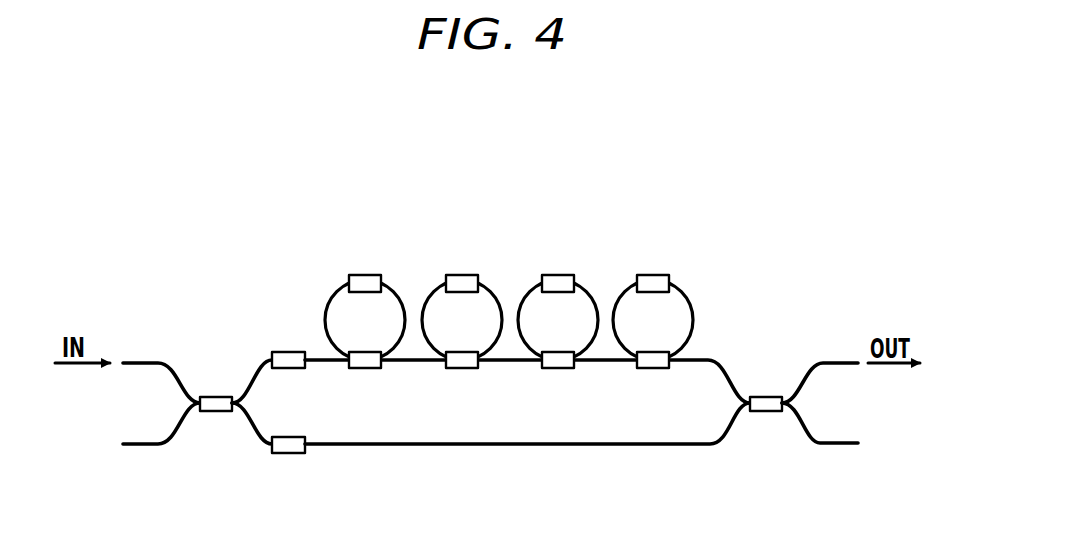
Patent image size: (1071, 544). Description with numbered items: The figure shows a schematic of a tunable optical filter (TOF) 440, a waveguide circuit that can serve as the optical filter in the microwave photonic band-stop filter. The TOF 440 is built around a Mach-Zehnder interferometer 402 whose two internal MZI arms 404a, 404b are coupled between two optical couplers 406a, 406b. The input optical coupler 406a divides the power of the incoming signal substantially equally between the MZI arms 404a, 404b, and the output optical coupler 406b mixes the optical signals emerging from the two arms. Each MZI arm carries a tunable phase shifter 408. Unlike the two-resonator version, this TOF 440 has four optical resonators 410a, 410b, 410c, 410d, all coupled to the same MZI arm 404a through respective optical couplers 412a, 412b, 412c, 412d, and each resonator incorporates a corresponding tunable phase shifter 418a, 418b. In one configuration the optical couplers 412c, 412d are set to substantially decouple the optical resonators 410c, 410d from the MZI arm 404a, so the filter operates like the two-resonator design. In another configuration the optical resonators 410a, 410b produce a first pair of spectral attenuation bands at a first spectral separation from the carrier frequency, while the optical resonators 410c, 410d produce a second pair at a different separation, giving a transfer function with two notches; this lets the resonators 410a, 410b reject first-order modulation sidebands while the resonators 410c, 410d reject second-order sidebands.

The tunable optical filter (TOF) 440 is at (511, 99).
The Mach-Zehnder interferometer 402 is at (225, 470).
The MZI arm 404a is at (717, 356).
The MZI arm 404b is at (517, 445).
The optical coupler 406a is at (218, 396).
The optical coupler 406b is at (763, 411).
The tunable phase shifter 408 is at (286, 369).
The optical resonator 410a is at (331, 281).
The optical resonator 410b is at (426, 281).
The optical resonator 410c is at (522, 281).
The optical resonator 410d is at (621, 281).
The optical coupler 412a is at (359, 369).
The optical coupler 412b is at (456, 369).
The optical coupler 412c is at (552, 369).
The optical coupler 412d is at (648, 369).
The tunable phase shifter 418a is at (372, 274).
The tunable phase shifter 418b is at (469, 274).